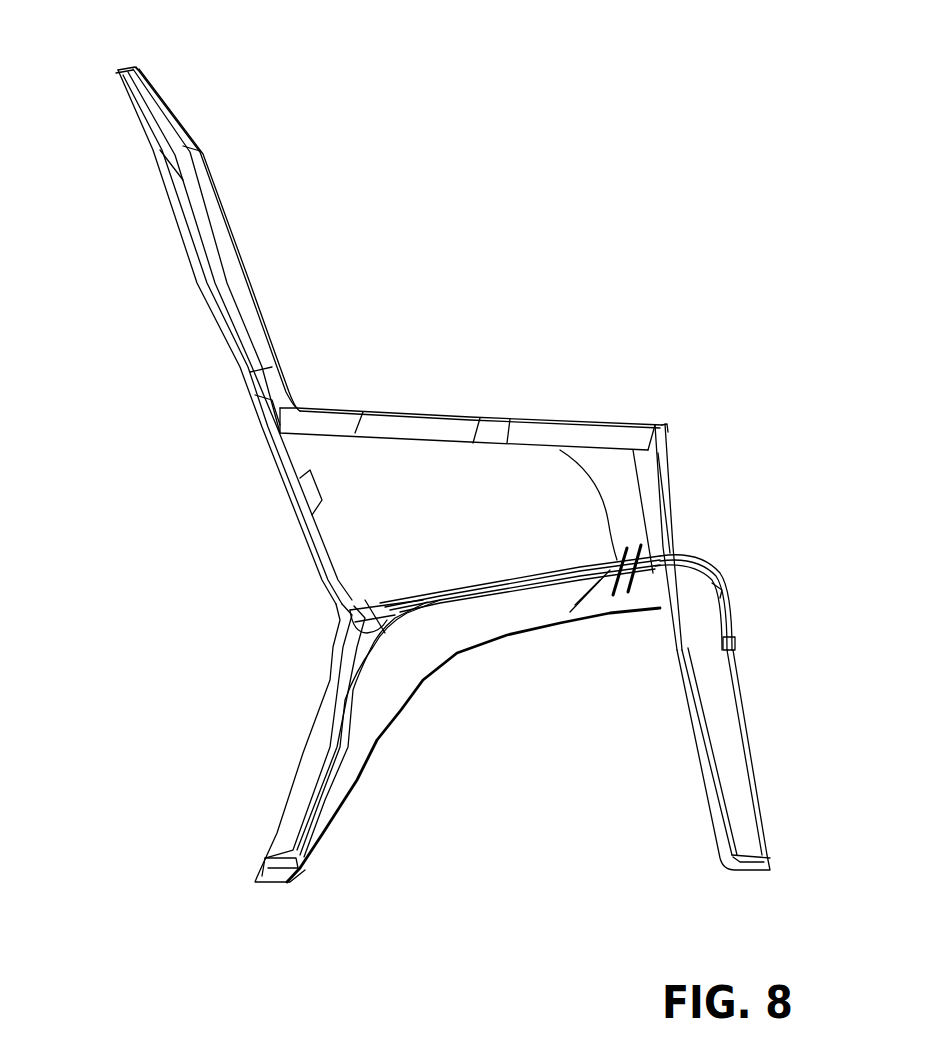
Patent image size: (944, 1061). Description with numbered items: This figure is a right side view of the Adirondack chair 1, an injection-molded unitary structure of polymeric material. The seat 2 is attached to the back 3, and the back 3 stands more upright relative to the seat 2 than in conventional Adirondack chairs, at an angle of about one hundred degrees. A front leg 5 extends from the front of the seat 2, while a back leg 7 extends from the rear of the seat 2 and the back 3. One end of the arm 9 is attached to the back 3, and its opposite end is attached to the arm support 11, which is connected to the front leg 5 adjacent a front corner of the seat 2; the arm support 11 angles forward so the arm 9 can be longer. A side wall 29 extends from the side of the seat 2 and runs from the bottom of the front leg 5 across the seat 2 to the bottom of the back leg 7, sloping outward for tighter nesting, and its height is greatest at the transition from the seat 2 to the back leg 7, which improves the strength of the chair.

The Adirondack chair 1 is at (380, 203).
The back 3 is at (173, 121).
The arm 9 is at (483, 409).
The arm support 11 is at (668, 493).
The seat 2 is at (520, 579).
The side wall 29 is at (417, 668).
The front leg 5 is at (733, 768).
The back leg 7 is at (287, 800).